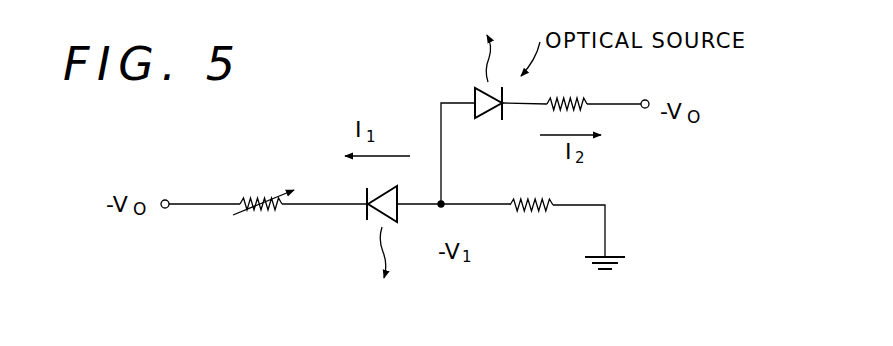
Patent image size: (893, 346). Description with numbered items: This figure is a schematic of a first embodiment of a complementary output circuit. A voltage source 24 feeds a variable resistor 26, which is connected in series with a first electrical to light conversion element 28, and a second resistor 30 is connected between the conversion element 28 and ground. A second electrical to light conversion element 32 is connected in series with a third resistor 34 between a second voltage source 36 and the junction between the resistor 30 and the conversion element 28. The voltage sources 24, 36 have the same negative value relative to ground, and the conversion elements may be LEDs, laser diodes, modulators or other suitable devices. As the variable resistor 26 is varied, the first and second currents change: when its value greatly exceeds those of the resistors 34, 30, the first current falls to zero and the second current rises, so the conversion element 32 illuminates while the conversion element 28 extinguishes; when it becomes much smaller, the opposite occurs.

The voltage source 24 is at (165, 199).
The variable resistor 26 is at (253, 195).
The first electrical to light conversion element 28 is at (377, 213).
The second resistor 30 is at (515, 202).
The second electrical to light conversion element 32 is at (475, 88).
The third resistor 34 is at (587, 103).
The voltage source 36 is at (645, 109).